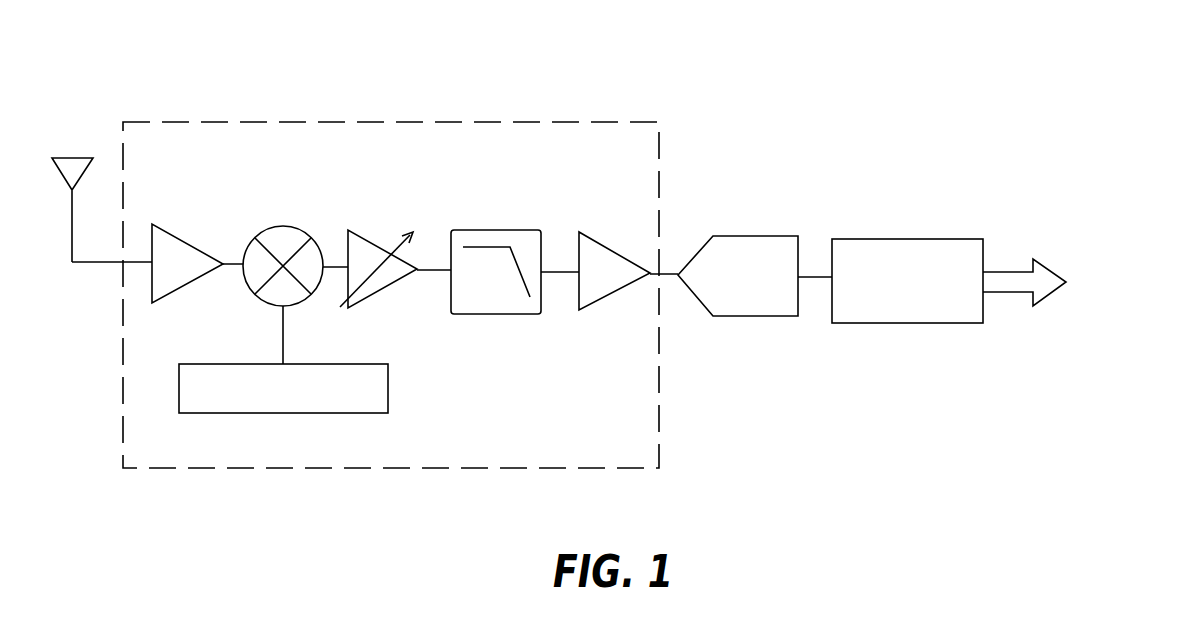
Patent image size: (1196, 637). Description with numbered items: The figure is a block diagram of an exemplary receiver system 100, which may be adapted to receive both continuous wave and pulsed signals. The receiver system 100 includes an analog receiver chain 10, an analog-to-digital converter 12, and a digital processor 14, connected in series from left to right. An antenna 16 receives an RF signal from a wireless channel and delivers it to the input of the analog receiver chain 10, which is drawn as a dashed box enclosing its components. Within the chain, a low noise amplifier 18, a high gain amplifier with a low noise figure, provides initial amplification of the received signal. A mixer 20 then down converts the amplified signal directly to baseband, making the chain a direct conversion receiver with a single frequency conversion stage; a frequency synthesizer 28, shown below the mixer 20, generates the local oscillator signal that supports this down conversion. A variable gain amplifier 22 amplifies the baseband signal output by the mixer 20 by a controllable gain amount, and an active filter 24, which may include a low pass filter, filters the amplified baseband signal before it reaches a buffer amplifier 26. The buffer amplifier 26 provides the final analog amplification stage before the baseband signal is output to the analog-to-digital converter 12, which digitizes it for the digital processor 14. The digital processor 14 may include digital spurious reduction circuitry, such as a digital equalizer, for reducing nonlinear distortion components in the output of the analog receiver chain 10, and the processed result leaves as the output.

The receiver system 100 is at (490, 76).
The analog receiver chain 10 is at (257, 122).
The analog-to-digital converter 12 is at (752, 235).
The digital processor 14 is at (897, 239).
The antenna 16 is at (67, 157).
The low noise amplifier 18 is at (187, 242).
The mixer 20 is at (285, 225).
The variable gain amplifier 22 is at (385, 242).
The active filter 24 is at (492, 229).
The buffer amplifier 26 is at (610, 242).
The frequency synthesizer 28 is at (255, 413).